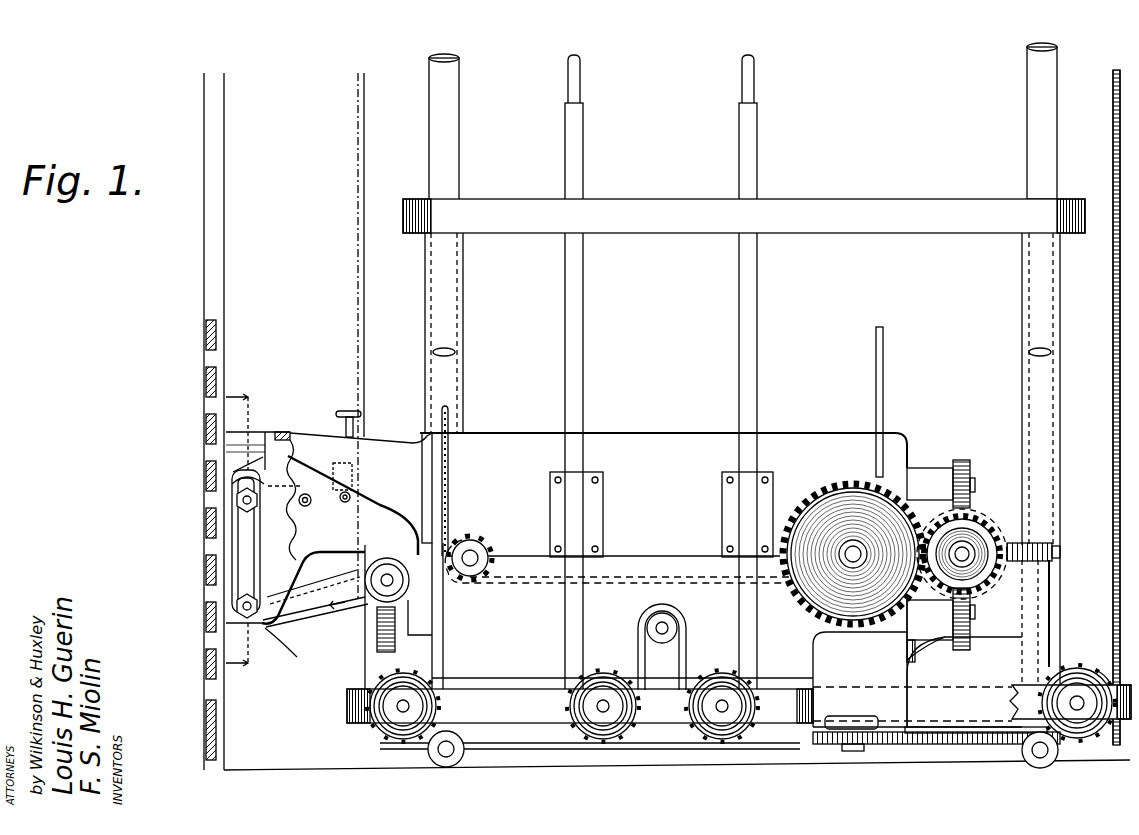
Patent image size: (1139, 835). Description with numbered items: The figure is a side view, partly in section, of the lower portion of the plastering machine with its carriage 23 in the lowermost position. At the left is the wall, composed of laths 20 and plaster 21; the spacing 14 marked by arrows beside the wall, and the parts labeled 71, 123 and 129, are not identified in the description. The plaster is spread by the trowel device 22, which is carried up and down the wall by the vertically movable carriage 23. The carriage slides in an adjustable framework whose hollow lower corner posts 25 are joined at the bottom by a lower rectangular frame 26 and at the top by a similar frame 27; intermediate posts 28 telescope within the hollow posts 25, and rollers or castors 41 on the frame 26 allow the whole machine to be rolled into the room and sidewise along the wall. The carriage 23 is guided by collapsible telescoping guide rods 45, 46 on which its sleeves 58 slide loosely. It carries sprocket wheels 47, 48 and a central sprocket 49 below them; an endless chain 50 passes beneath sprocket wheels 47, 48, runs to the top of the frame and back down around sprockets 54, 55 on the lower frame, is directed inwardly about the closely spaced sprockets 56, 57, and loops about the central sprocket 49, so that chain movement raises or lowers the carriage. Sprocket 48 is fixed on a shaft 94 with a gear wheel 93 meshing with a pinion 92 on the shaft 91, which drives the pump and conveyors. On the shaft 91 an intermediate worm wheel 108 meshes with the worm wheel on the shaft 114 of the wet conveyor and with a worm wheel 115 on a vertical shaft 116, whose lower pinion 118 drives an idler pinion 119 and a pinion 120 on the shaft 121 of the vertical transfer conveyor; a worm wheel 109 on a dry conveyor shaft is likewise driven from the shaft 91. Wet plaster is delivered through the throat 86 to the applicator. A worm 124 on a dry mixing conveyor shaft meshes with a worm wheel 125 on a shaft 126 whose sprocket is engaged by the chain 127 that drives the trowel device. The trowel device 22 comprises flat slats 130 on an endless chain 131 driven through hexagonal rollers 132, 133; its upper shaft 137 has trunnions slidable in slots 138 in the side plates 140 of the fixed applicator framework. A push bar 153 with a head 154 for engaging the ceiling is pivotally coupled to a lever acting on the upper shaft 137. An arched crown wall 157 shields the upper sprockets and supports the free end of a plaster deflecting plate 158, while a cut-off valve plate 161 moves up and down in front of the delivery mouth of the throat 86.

The stroke distance 14 is at (240, 529).
The laths 20 is at (210, 555).
The plaster 21 is at (227, 345).
The trowel device 22 is at (270, 432).
The carriage 23 is at (510, 432).
The lower corner posts 25 is at (460, 350).
The lower rectangular frame 26 is at (515, 692).
The upper frame 27 is at (855, 210).
The intermediate posts 28 is at (456, 145).
The rollers or castors 41 is at (455, 760).
The guide rods 45 is at (565, 172).
The guide rods 46 is at (568, 90).
The sprocket wheel 47 is at (480, 540).
The sprocket wheel 48 is at (820, 498).
The sprocket wheel 49 is at (655, 615).
The chain 50 is at (884, 372).
The sprocket 54 is at (425, 676).
The sprocket 55 is at (1078, 690).
The sprocket 56 is at (605, 745).
The sprocket 57 is at (732, 743).
The sleeves 58 is at (550, 497).
The lug 71 is at (1100, 675).
The throat 86 is at (383, 440).
The shaft 91 is at (975, 530).
The pinion 92 is at (968, 525).
The gear wheel 93 is at (825, 490).
The shaft 94 is at (853, 548).
The worm wheel 108 is at (1056, 540).
The worm wheel 109 is at (968, 650).
The shaft 114 is at (973, 478).
The worm wheel 115 is at (1040, 553).
The vertical shaft 116 is at (1045, 612).
The pinion 118 is at (1000, 746).
The idler pinion 119 is at (916, 747).
The pinion 120 is at (882, 745).
The shaft 121 is at (846, 752).
The rack 123 is at (960, 462).
The worm 124 is at (380, 645).
The worm wheel 125 is at (376, 530).
The shaft 126 is at (389, 576).
The chain 127 is at (315, 619).
The link 129 is at (301, 643).
The slats 130 is at (233, 602).
The endless chain 131 is at (232, 578).
The hexagonal roller 132 is at (313, 587).
The hexagonal roller 133 is at (283, 505).
The upper shaft 137 is at (233, 518).
The slots 138 is at (295, 548).
The side plates 140 is at (313, 587).
The push bar 153 is at (346, 425).
The head 154 is at (350, 412).
The crown wall 157 is at (240, 478).
The plaster deflecting plate 158 is at (235, 465).
The cut-off valve plate 161 is at (302, 478).